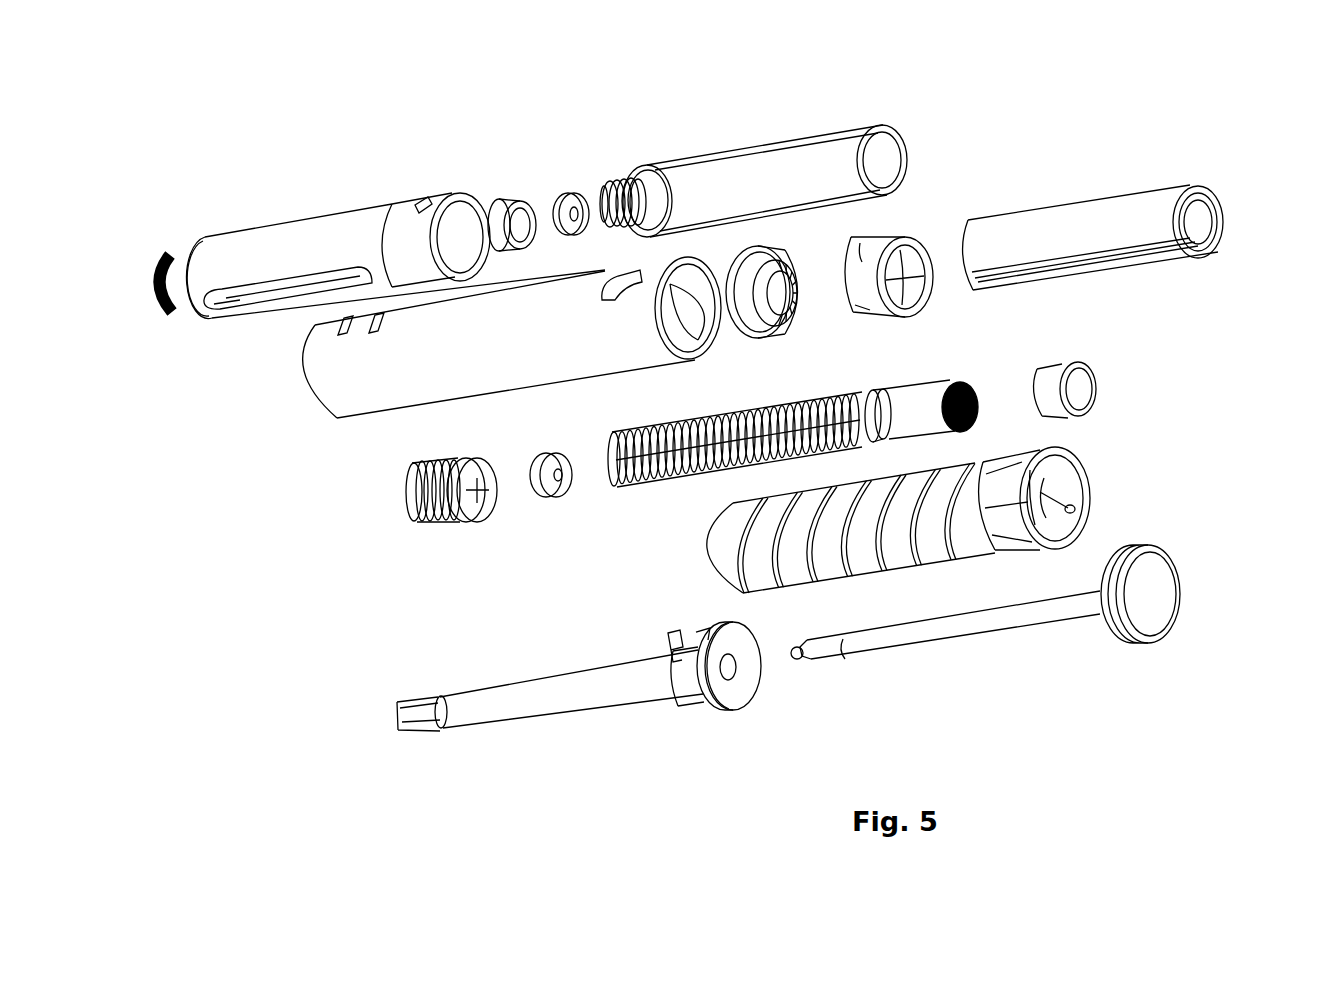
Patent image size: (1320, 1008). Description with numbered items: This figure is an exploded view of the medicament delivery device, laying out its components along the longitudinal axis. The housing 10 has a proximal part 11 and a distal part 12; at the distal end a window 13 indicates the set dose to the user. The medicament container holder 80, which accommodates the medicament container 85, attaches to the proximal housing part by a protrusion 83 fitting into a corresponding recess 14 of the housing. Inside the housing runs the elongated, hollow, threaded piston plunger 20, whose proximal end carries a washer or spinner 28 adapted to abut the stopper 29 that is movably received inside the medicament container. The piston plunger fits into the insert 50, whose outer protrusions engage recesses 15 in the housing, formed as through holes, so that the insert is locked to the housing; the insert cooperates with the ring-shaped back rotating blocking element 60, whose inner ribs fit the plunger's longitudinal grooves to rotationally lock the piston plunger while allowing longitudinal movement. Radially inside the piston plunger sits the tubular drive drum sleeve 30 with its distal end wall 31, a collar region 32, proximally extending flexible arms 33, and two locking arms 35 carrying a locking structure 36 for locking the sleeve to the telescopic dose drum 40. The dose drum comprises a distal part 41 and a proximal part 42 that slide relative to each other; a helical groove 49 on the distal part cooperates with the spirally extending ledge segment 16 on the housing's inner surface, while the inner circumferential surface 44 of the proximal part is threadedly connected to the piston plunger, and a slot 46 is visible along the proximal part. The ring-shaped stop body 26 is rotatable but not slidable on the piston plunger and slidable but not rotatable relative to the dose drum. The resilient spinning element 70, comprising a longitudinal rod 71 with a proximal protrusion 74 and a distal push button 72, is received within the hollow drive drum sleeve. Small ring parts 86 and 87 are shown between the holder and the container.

The housing 10 is at (483, 372).
The proximal part or end of the housing 11 is at (345, 408).
The distal part or end of the housing 12 is at (655, 342).
The window 13 is at (603, 295).
The recess 14 is at (340, 329).
The recess 15 is at (372, 329).
The spirally extending ledge segment 16 is at (696, 340).
The piston plunger 20 is at (943, 384).
The stop body 26 is at (1065, 368).
The washer or spinner 28 is at (553, 497).
The stopper 29 is at (414, 524).
The drive drum sleeve 30 is at (513, 706).
The distal end wall 31 is at (753, 677).
The collar 32 is at (677, 682).
The flexible arms 33 is at (425, 708).
The locking arms 35 is at (700, 624).
The locking structure 36 is at (668, 640).
The telescopic dose drum 40 is at (1135, 285).
The distal part of the dose drum 41 is at (830, 527).
The proximal part of the dose drum 42 is at (1103, 206).
The inner circumferential surface 44 is at (1202, 212).
The slot 46 is at (1158, 249).
The helically extending groove 49 is at (708, 552).
The insert 50 is at (795, 317).
The back rotating blocking element 60 is at (876, 284).
The resilient spinning element 70 is at (1008, 620).
The longitudinal rod 71 is at (941, 660).
The push button 72 is at (1150, 607).
The protrusion 74 is at (805, 660).
The medicament container holder 80 is at (237, 246).
The protrusion 83 is at (423, 190).
The medicament container 85 is at (810, 158).
The washer 86 is at (573, 192).
The ring 87 is at (493, 203).